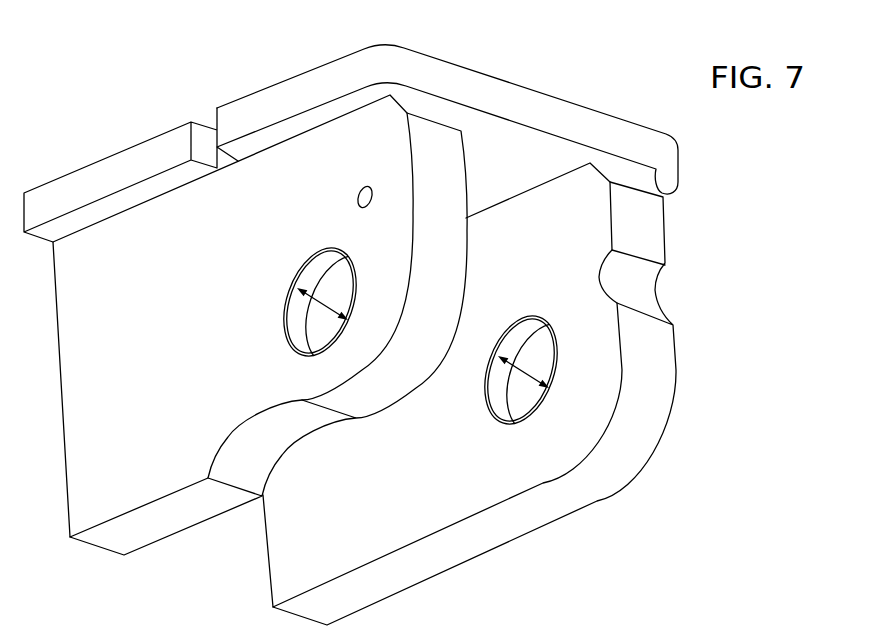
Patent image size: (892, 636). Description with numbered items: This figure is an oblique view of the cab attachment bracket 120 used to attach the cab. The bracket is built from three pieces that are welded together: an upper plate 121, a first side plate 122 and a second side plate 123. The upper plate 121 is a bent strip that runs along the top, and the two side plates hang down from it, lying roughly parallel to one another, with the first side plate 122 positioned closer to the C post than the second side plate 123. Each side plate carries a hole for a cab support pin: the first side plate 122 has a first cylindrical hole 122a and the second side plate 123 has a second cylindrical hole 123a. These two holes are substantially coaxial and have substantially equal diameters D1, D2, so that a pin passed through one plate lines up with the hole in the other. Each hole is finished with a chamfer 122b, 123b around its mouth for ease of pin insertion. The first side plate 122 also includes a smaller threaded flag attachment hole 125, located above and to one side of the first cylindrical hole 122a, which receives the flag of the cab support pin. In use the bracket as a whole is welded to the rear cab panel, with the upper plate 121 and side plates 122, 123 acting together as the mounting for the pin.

The cab attachment bracket 120 is at (119, 127).
The upper plate 121 is at (311, 77).
The first side plate 122 is at (138, 468).
The first cylindrical hole 122a is at (323, 283).
The chamfer 122b is at (297, 310).
The diameter D1 is at (300, 343).
The second side plate 123 is at (520, 482).
The second cylindrical hole 123a is at (503, 333).
The chamfer 123b is at (530, 320).
The diameter D2 is at (497, 425).
The threaded flag attachment hole 125 is at (354, 200).